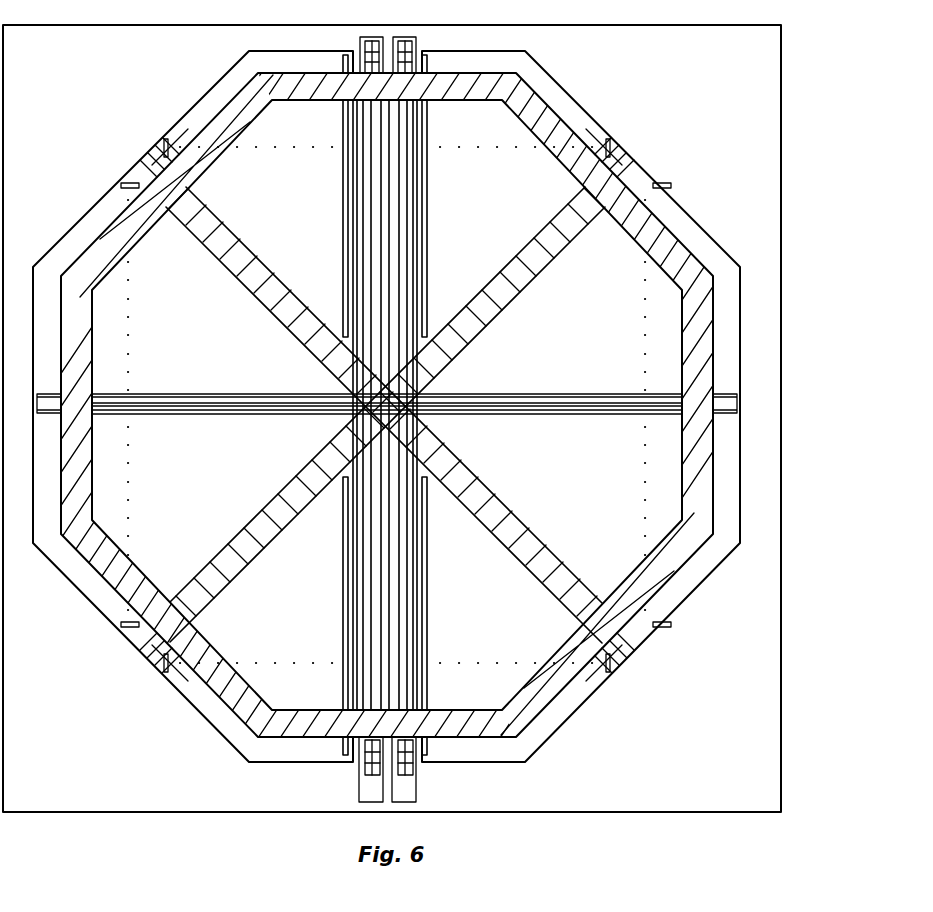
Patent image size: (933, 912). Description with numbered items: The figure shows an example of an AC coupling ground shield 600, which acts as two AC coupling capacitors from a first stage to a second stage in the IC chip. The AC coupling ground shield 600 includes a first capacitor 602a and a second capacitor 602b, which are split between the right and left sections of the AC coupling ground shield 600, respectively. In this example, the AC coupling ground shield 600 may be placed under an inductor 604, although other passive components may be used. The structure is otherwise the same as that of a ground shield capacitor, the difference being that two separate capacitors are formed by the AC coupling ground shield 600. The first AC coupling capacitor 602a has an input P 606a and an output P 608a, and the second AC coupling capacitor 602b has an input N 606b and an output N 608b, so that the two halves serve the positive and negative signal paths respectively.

The AC coupling ground shield 600 is at (466, 447).
The first capacitor 602a is at (780, 829).
The second capacitor 602b is at (360, 821).
The inductor 604 is at (713, 325).
The input P 606a is at (417, 783).
The input N 606b is at (359, 784).
The output P 608a is at (418, 36).
The output N 608b is at (360, 38).